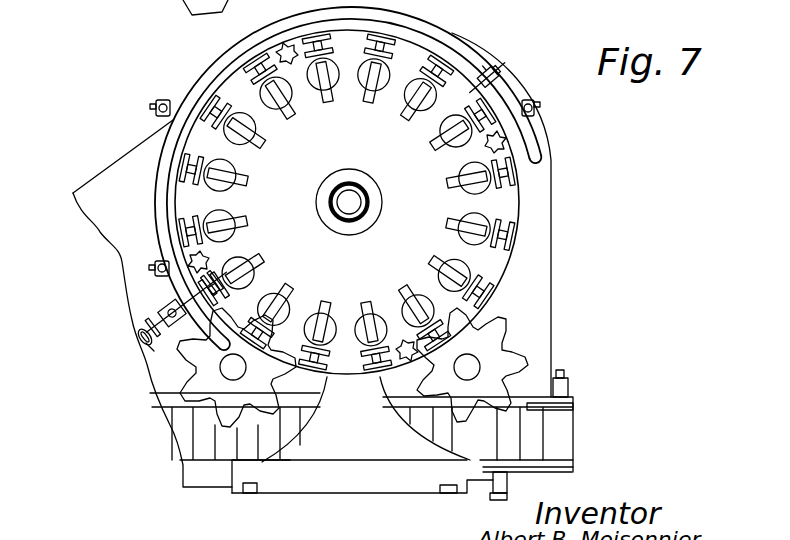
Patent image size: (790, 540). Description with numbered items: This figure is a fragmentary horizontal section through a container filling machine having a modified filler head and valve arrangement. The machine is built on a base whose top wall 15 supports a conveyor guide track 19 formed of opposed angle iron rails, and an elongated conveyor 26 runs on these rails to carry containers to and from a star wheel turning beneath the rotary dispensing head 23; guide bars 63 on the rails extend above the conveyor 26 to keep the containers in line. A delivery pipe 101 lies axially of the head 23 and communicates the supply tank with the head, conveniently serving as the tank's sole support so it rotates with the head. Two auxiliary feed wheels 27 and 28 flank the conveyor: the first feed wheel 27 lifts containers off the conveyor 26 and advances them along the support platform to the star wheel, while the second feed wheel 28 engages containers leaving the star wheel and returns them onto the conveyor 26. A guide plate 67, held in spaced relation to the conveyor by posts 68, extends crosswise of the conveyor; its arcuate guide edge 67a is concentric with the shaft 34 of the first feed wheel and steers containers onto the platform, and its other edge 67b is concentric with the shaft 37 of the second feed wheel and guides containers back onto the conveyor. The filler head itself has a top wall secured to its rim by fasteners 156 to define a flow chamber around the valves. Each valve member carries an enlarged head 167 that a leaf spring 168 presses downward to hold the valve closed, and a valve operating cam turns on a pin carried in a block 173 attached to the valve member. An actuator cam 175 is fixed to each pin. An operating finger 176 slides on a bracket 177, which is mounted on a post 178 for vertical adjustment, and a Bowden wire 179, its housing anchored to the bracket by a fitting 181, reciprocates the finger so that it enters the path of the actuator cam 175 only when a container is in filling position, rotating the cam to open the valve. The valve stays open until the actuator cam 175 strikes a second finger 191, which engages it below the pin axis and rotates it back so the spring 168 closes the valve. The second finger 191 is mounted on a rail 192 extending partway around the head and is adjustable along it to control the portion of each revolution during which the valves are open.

The top wall 15 is at (552, 283).
The conveyor guide track 19 is at (575, 400).
The rotary dispensing head 23 is at (425, 43).
The elongated conveyor 26 is at (555, 432).
The auxiliary feed wheel 27 is at (322, 393).
The auxiliary feed wheel 28 is at (531, 339).
The shaft 34 is at (232, 372).
The shaft 37 is at (470, 370).
The guide bars 63 is at (572, 465).
The guide plate 67 is at (357, 473).
The arcuate guide edge 67a is at (288, 437).
The other edge 67b is at (400, 426).
The posts 68 is at (258, 487).
The delivery pipe 101 is at (368, 202).
The fasteners 156 is at (224, 256).
The enlarged head 167 is at (247, 185).
The leaf spring 168 is at (262, 143).
The block 173 is at (186, 205).
The actuator cam 175 is at (186, 229).
The operating finger 176 is at (200, 290).
The bracket 177 is at (165, 305).
The post 178 is at (150, 349).
The Bowden wire 179 is at (150, 345).
The fitting 181 is at (148, 330).
The second finger 191 is at (480, 67).
The rail 192 is at (495, 78).